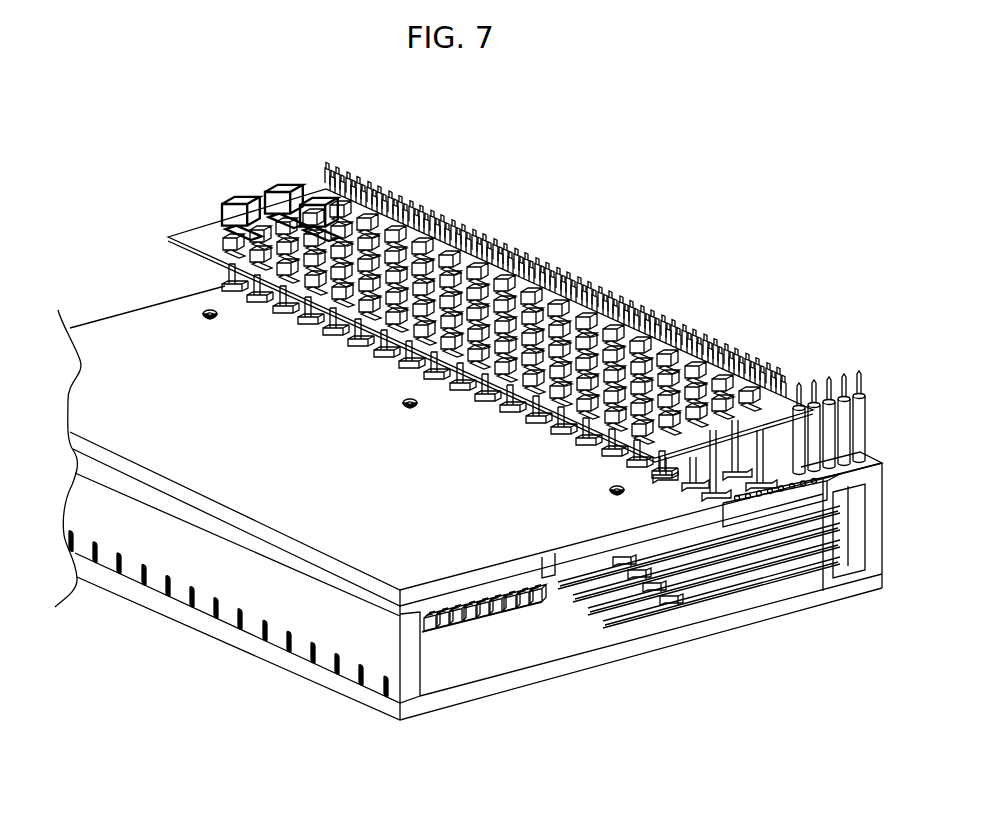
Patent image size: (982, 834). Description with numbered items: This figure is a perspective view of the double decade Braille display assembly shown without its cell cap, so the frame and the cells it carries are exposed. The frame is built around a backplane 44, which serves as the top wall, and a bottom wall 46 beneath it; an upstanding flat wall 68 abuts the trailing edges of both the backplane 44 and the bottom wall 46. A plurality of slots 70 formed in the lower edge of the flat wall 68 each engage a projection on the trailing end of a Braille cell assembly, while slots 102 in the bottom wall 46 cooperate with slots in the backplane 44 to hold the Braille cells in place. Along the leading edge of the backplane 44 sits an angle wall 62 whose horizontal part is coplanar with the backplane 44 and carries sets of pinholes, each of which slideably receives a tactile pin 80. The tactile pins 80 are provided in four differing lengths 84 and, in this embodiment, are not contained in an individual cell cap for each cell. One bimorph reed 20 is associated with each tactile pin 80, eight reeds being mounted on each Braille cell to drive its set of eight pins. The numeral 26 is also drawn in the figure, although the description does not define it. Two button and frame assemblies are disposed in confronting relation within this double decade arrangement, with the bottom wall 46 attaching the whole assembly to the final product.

The bimorph reed 20 is at (727, 592).
The cable 26 is at (604, 628).
The backplane 44 is at (476, 503).
The bottom wall 46 is at (488, 606).
The angle wall 62 is at (883, 513).
The upstanding flat wall 68 is at (468, 515).
The slots 70 is at (143, 590).
The tactile pin 80 is at (866, 414).
The pin lengths 84 is at (843, 388).
The slots 102 is at (203, 317).